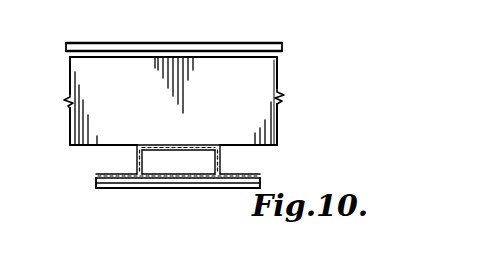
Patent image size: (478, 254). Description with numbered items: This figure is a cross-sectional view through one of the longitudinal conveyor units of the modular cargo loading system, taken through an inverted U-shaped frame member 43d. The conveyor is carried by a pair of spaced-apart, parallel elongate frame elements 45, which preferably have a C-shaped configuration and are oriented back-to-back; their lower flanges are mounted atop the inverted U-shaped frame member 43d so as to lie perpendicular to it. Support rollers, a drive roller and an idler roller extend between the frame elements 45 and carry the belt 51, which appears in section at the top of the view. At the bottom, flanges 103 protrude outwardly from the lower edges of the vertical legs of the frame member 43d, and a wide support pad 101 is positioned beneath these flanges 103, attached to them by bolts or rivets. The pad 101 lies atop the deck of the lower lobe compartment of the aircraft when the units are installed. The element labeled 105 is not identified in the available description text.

The belt 51 is at (183, 42).
The frame element 45 is at (285, 70).
The inverted U-shaped frame member 43d is at (136, 151).
The flange 103 is at (106, 175).
The wide support pad 101 is at (165, 182).
The lower plate layer 105 is at (105, 189).